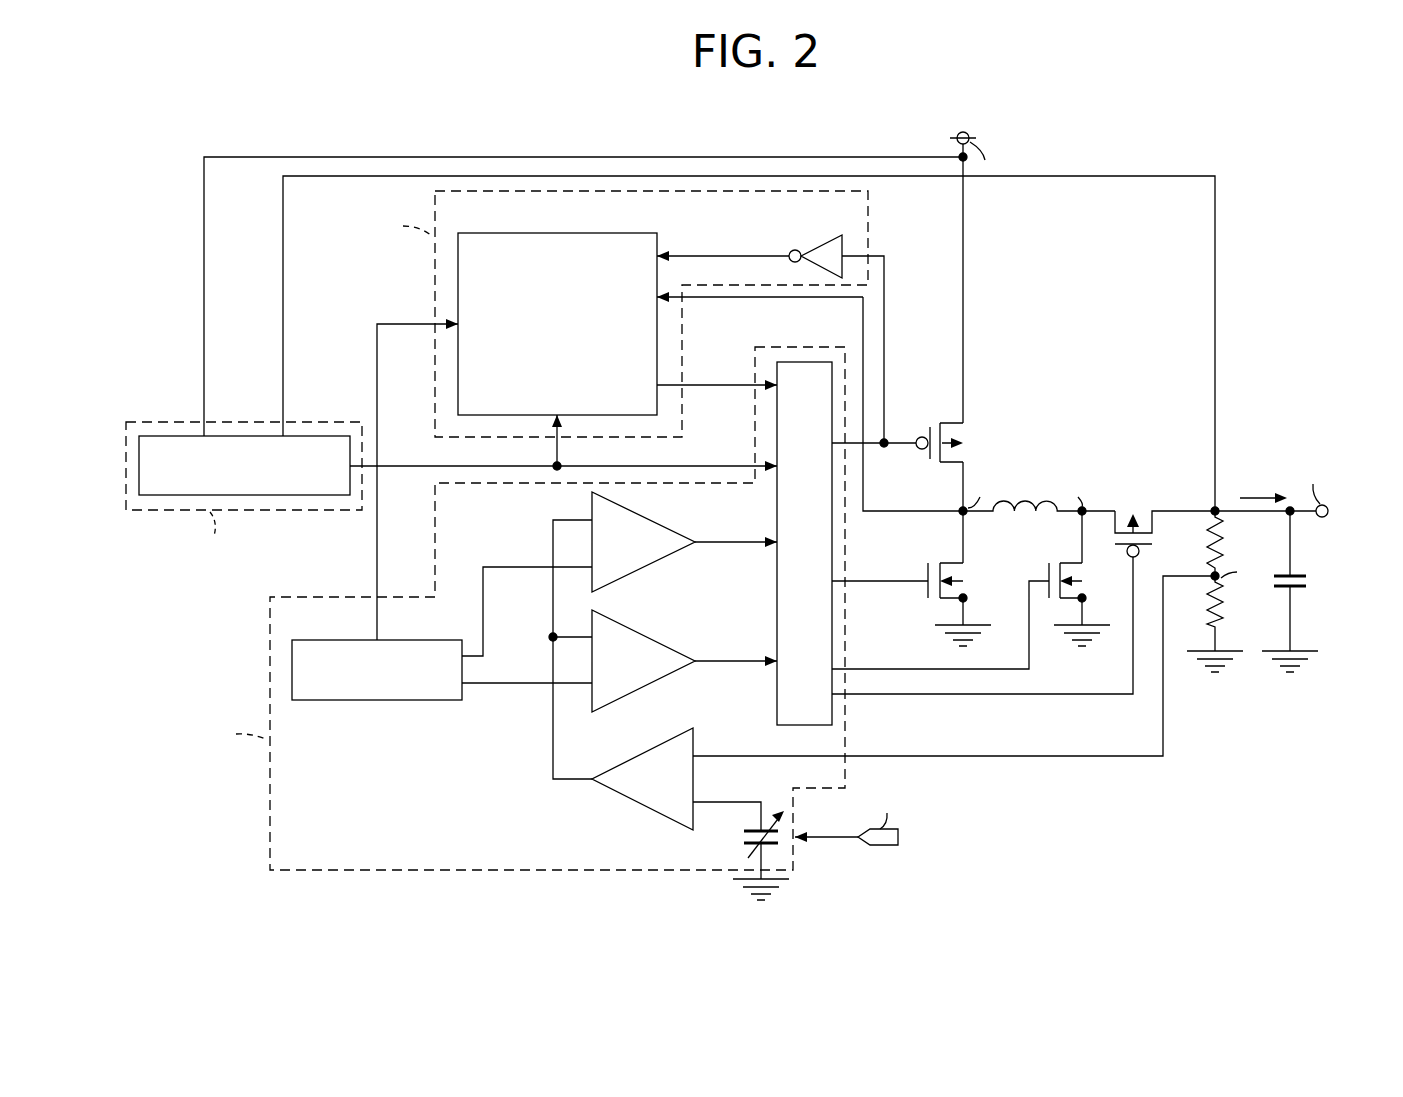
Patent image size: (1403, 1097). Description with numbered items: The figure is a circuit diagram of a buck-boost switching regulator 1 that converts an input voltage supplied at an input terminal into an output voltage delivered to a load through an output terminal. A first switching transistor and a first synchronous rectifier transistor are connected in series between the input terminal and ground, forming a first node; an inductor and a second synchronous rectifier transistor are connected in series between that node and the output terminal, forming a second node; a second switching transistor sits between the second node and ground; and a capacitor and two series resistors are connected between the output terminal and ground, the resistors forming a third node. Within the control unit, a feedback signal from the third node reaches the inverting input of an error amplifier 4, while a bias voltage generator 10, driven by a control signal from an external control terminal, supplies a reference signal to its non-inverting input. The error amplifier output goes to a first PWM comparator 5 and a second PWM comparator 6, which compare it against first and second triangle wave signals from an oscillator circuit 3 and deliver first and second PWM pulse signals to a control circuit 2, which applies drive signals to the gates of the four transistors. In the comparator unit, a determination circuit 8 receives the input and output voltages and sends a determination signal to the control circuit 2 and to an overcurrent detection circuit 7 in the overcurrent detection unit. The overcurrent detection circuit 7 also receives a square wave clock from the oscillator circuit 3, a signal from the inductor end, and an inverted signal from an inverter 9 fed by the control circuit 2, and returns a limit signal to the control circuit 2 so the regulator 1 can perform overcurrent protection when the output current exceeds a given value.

The buck-boost switching regulator 1 is at (814, 136).
The control circuit 2 is at (806, 362).
The oscillator circuit 3 is at (412, 702).
The error amplifier 4 is at (650, 751).
The first pulse width modulation (PWM) comparator 5 is at (660, 524).
The second PWM comparator 6 is at (660, 643).
The overcurrent detection circuit 7 is at (458, 280).
The determination circuit 8 is at (291, 497).
The inverter 9 is at (820, 246).
The bias voltage generator 10 is at (740, 838).